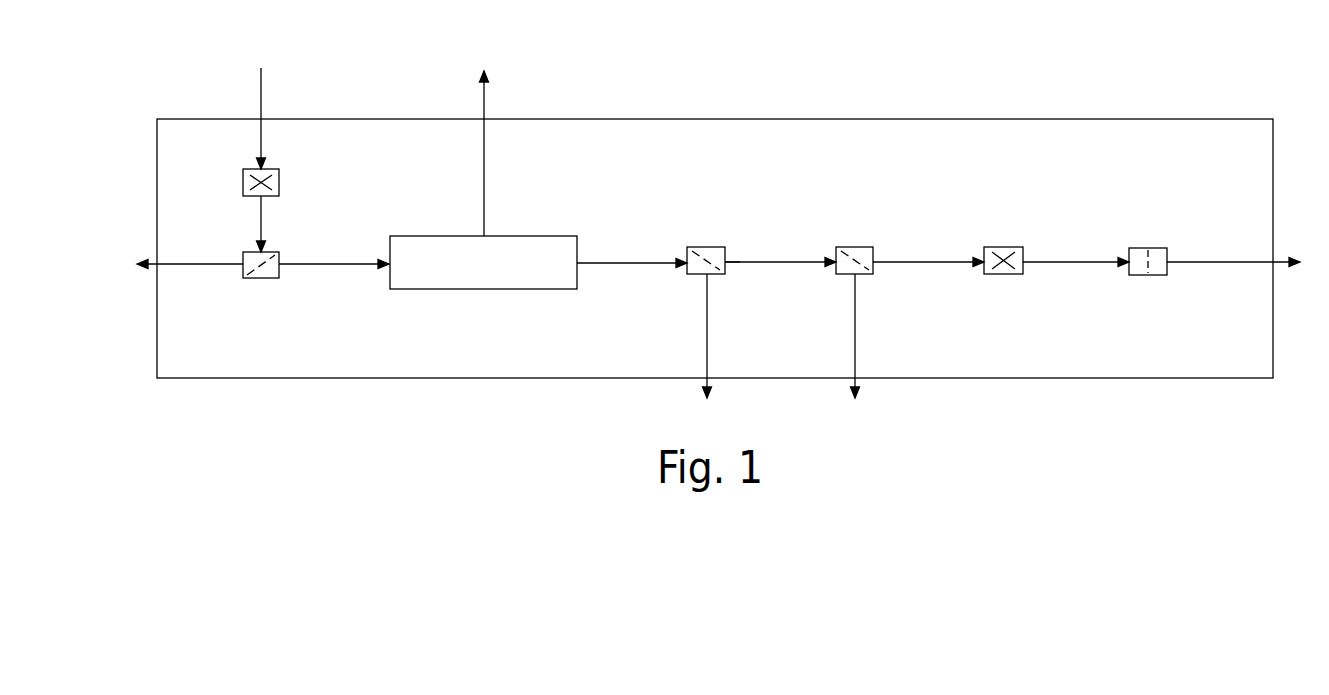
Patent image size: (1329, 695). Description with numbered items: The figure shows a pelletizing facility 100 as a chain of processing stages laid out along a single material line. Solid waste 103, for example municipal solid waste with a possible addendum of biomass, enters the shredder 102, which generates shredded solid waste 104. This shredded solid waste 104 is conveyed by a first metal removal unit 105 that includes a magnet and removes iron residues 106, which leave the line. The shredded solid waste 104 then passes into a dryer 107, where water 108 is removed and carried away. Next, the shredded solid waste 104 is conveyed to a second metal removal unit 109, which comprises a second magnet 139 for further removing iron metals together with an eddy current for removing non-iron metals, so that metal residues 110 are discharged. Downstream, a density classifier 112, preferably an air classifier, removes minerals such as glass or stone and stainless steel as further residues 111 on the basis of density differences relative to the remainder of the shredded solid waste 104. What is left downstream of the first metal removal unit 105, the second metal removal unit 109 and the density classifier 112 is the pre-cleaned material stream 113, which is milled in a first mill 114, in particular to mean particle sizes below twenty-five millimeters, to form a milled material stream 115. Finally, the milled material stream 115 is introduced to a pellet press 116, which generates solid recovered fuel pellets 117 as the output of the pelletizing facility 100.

The pelletizing facility 100 is at (733, 118).
The shredder 102 is at (279, 183).
The solid waste 103 is at (261, 90).
The shredded solid waste 104 is at (261, 215).
The first metal removal unit 105 is at (261, 279).
The iron residues 106 is at (208, 264).
The dryer 107 is at (533, 236).
The water 108 is at (484, 90).
The second metal removal unit 109 is at (707, 247).
The metal residues 110 is at (707, 310).
The further residues 111 is at (855, 310).
The density classifier 112 is at (862, 247).
The pre-cleaned material stream 113 is at (930, 262).
The first mill 114 is at (1005, 247).
The milled material stream 115 is at (1067, 262).
The pellet press 116 is at (1148, 278).
The solid recovered fuel pellets 117 is at (1208, 262).
The second magnet 139 is at (727, 255).